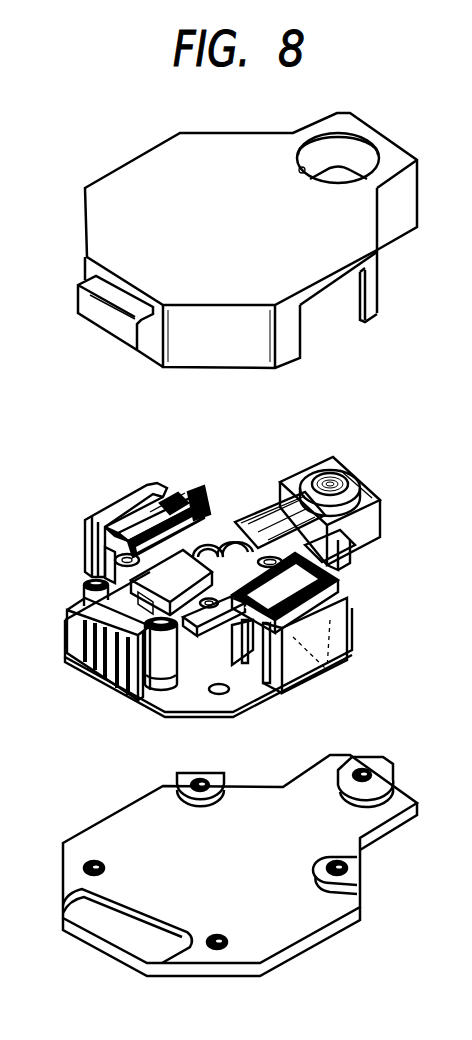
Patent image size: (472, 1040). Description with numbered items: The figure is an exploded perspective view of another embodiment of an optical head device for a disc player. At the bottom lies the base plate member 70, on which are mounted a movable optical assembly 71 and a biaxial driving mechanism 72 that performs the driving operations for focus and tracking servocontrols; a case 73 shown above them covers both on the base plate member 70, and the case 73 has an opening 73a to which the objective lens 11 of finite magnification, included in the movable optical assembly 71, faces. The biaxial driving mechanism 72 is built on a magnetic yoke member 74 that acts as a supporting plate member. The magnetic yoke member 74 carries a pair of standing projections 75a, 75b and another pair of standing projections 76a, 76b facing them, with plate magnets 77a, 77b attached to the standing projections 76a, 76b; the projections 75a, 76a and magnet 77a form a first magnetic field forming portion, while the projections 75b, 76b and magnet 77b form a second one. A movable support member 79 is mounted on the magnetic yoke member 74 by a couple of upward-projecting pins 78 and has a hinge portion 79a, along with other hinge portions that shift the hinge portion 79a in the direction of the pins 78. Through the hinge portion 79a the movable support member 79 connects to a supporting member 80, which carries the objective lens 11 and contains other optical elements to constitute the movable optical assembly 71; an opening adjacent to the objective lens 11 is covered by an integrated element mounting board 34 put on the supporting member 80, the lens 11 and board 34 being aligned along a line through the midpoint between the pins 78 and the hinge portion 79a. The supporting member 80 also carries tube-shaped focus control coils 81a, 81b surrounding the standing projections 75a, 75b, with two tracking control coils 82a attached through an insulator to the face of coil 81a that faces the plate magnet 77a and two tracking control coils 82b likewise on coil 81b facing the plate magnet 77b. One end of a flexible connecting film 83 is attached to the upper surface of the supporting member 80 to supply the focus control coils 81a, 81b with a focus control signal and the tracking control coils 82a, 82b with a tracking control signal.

The objective lens 11 is at (332, 472).
The integrated element mounting board 34 is at (332, 530).
The base plate member 70 is at (115, 830).
The movable optical assembly 71 is at (367, 470).
The biaxial driving mechanism 72 is at (224, 581).
The case 73 is at (382, 253).
The opening 73a is at (299, 172).
The magnetic yoke member 74 is at (157, 712).
The standing projection 75a is at (170, 584).
The standing projection 75b is at (118, 540).
The standing projection 76a is at (345, 650).
The standing projection 76b is at (112, 500).
The plate magnet 77a is at (350, 600).
The plate magnet 77b is at (130, 493).
The pins 78 is at (82, 592).
The movable support member 79 is at (178, 604).
The hinge portion 79a is at (226, 524).
The supporting member 80 is at (374, 510).
The focus control coil 81a is at (347, 562).
The focus control coil 81b is at (200, 486).
The tracking control coils 82a is at (327, 673).
The tracking control coils 82b is at (170, 496).
The flexible connecting film 83 is at (352, 552).